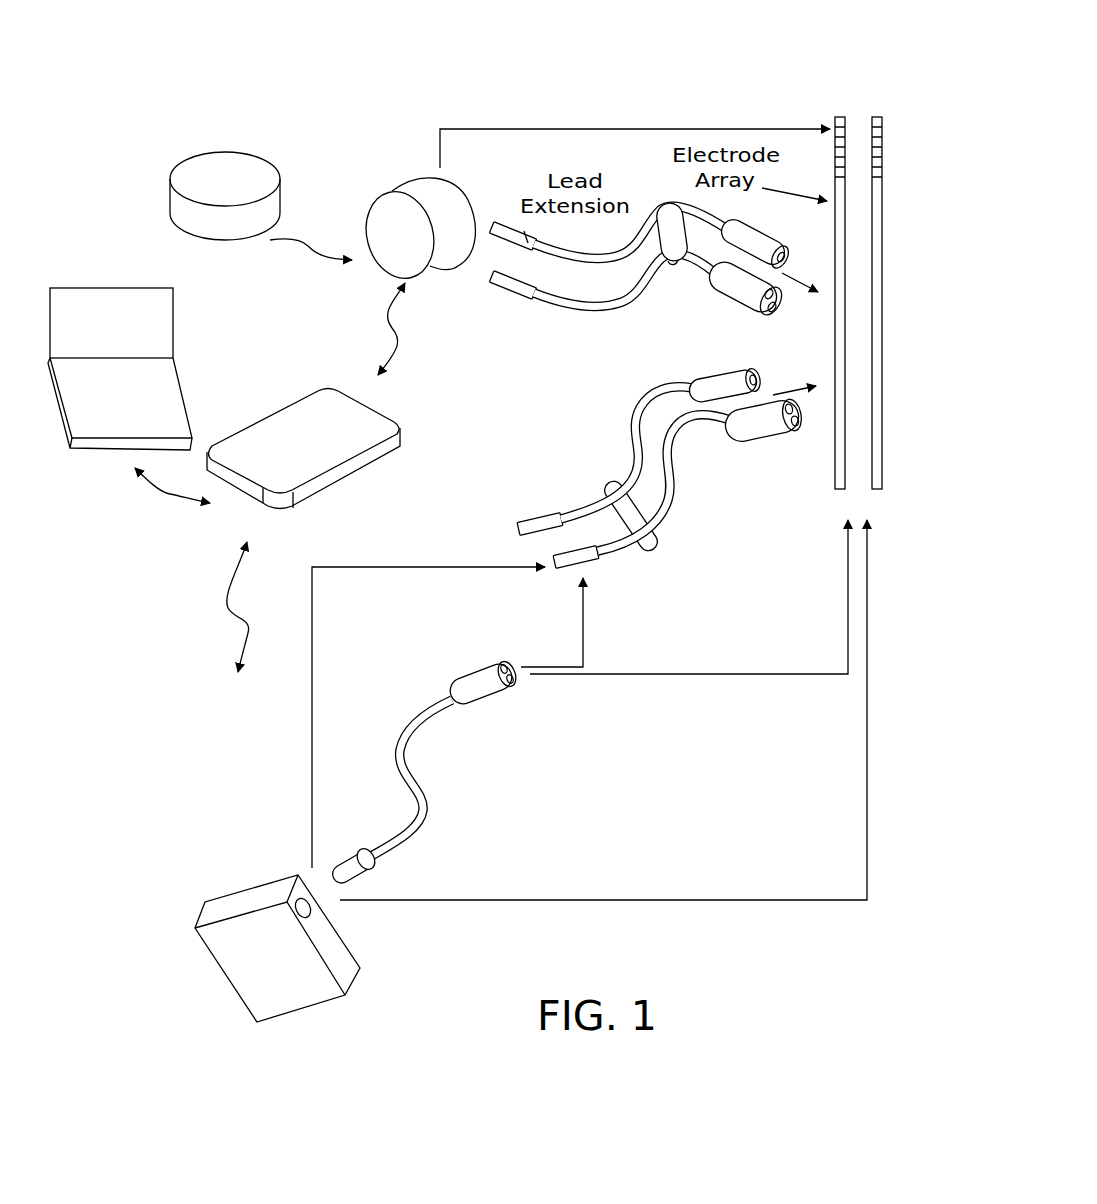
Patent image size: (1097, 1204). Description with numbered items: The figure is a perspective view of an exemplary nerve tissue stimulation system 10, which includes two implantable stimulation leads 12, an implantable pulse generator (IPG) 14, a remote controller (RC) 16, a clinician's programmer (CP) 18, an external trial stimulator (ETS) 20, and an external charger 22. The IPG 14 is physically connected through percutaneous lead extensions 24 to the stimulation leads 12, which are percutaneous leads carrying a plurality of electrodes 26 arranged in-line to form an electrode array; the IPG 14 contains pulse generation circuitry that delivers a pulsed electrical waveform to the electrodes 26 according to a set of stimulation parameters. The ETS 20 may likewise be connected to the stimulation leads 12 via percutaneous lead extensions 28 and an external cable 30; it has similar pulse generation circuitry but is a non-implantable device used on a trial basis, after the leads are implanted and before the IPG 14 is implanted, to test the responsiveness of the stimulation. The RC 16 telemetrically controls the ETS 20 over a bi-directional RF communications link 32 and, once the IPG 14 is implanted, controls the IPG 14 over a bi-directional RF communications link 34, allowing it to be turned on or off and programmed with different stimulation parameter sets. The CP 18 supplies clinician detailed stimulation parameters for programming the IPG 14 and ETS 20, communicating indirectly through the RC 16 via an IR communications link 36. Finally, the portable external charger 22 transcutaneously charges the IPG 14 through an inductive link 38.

The nerve tissue stimulation system 10 is at (606, 80).
The implantable stimulation leads 12 is at (855, 108).
The implantable pulse generator (IPG) 14 is at (402, 186).
The remote controller (RC) 16 is at (315, 408).
The clinician's programmer (CP) 18 is at (95, 300).
The external trial stimulator (ETS) 20 is at (247, 902).
The external charger 22 is at (225, 162).
The percutaneous lead extensions 24 is at (660, 203).
The electrodes 26 is at (845, 150).
The percutaneous lead extensions 28 is at (607, 495).
The external cable 30 is at (422, 708).
The bi-directional RF communications link 32 is at (243, 647).
The bi-directional RF communications link 34 is at (398, 350).
The IR communications link 36 is at (163, 496).
The inductive link 38 is at (285, 243).